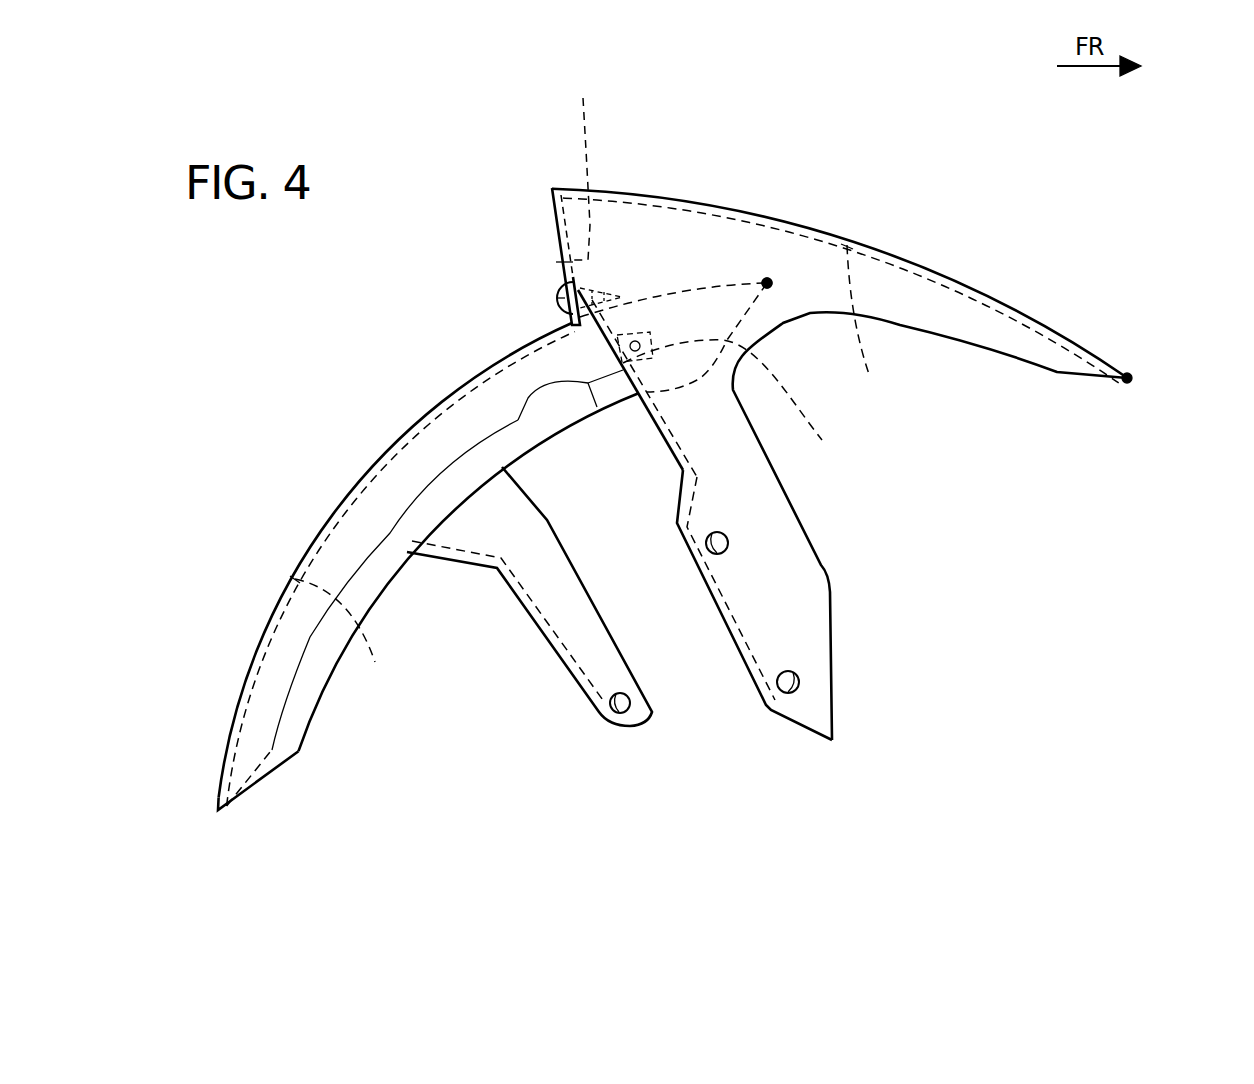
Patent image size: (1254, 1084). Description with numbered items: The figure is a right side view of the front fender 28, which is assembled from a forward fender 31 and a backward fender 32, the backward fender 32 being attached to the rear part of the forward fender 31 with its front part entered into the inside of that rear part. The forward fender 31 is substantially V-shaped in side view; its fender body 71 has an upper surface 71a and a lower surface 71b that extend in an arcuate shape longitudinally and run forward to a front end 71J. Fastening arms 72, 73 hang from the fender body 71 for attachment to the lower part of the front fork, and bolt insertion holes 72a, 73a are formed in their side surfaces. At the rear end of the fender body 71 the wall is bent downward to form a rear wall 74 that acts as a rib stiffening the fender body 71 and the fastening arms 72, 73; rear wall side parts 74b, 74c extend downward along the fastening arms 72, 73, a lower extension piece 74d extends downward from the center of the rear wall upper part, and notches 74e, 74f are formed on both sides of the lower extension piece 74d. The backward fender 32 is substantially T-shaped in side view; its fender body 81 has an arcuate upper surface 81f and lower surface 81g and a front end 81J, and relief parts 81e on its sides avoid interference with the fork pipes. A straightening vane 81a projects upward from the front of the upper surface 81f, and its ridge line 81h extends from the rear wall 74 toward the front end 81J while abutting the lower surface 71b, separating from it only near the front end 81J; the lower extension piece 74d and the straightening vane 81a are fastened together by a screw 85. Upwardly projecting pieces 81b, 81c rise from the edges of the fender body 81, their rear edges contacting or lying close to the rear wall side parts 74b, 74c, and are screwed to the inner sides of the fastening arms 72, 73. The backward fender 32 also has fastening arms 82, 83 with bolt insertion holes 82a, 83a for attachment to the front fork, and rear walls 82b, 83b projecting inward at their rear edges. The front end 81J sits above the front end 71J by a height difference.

The front fender 28 is at (919, 143).
The forward fender 31 is at (1032, 307).
The backward fender 32 is at (257, 637).
The fender body 71 is at (909, 285).
The upper surface 71a is at (823, 232).
The lower surface 71b is at (872, 323).
The front end 71J is at (1130, 378).
The fastening arm 72 is at (832, 605).
The fastening arm 73 is at (836, 623).
The bolt insertion hole 72a is at (823, 659).
The bolt insertion hole 73a is at (730, 542).
The rear wall 74 is at (548, 206).
The rear wall side part 74b is at (664, 535).
The rear wall side part 74c is at (673, 460).
The lower extension piece 74d is at (567, 261).
The notch 74e is at (588, 167).
The notch 74f is at (588, 167).
The fender body 81 is at (337, 543).
The straightening vane 81a is at (767, 283).
The upwardly projecting piece 81b is at (767, 398).
The upwardly projecting piece 81c is at (767, 398).
The relief part 81e is at (563, 420).
The upper surface 81f is at (373, 465).
The lower surface 81g is at (355, 636).
The ridge line 81h is at (767, 283).
The front end 81J is at (767, 283).
The fastening arm 82 is at (529, 653).
The fastening arm 83 is at (613, 725).
The bolt insertion hole 82a is at (561, 738).
The bolt insertion hole 83a is at (603, 717).
The rear wall 82b is at (508, 622).
The rear wall 83b is at (533, 620).
The screw 85 is at (556, 298).